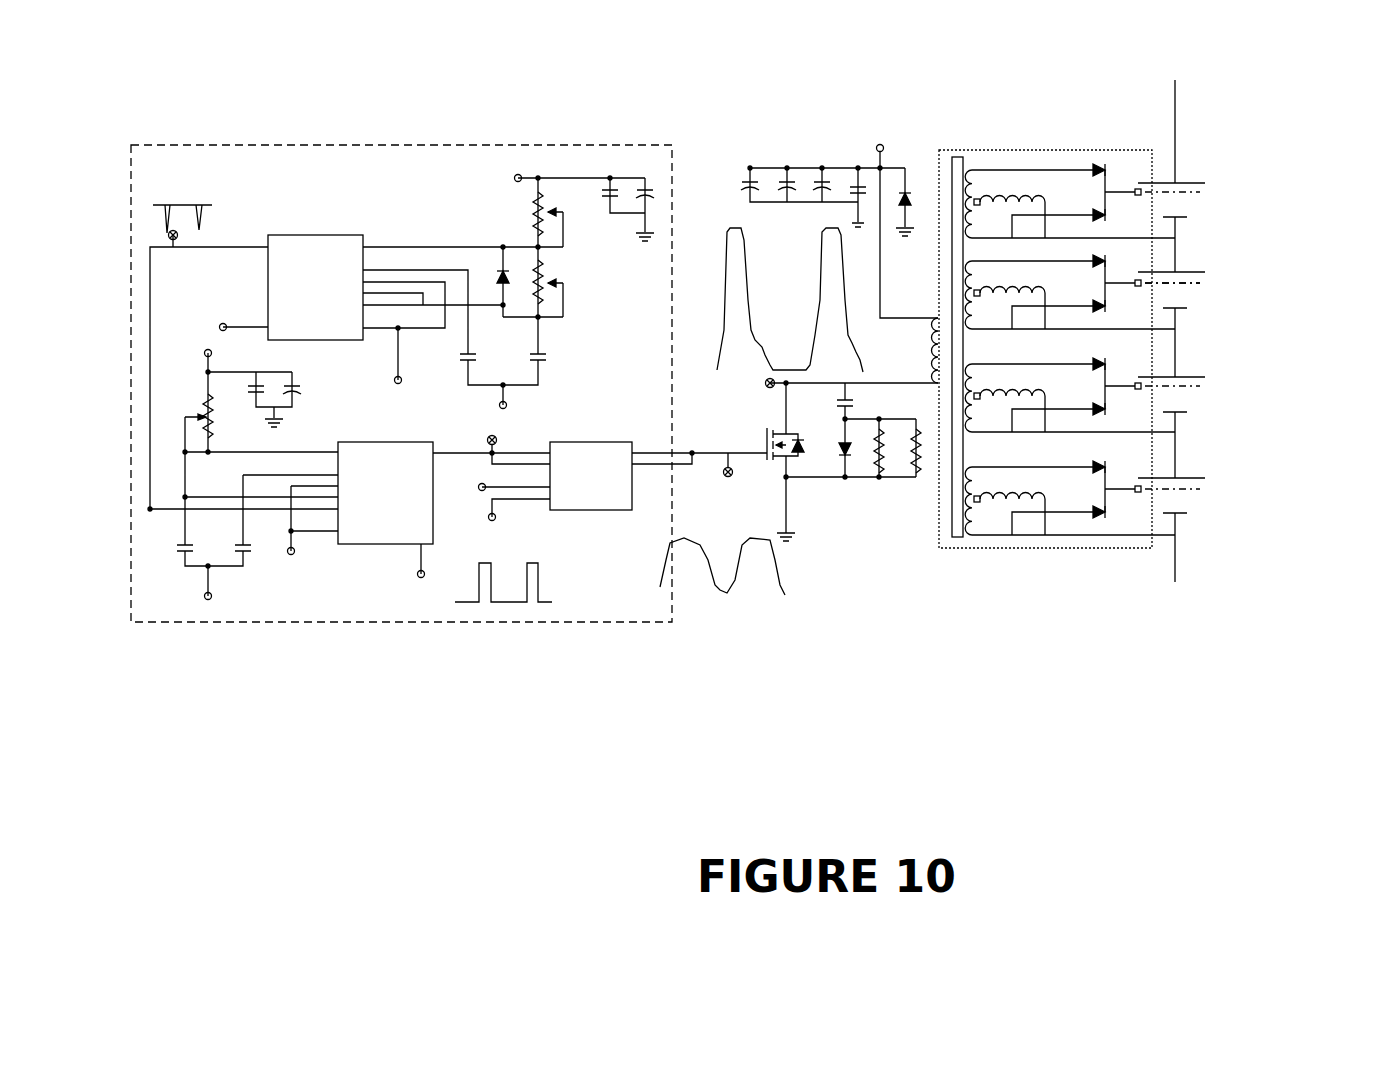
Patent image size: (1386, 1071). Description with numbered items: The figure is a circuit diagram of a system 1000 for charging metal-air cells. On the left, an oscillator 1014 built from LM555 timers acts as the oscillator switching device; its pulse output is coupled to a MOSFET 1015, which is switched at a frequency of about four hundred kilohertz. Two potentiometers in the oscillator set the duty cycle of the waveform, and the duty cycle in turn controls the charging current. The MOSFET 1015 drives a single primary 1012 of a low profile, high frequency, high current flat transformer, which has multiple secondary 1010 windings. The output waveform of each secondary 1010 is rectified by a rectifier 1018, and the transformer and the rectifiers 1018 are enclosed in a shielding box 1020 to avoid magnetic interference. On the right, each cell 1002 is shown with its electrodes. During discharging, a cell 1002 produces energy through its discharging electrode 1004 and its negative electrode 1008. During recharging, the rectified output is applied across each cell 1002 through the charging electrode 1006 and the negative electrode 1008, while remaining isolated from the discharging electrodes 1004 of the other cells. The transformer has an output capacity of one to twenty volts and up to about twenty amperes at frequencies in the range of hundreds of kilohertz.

The system 1000 is at (262, 78).
The cell 1002 is at (1226, 193).
The discharging electrode 1004 is at (1187, 266).
The charging electrode 1006 is at (1200, 287).
The negative electrode 1008 is at (1187, 312).
The secondary 1010 is at (983, 195).
The primary 1012 is at (941, 345).
The oscillator 1014 is at (404, 383).
The MOSFET 1015 is at (808, 487).
The rectifier 1018 is at (1109, 146).
The shielding box 1020 is at (1045, 555).